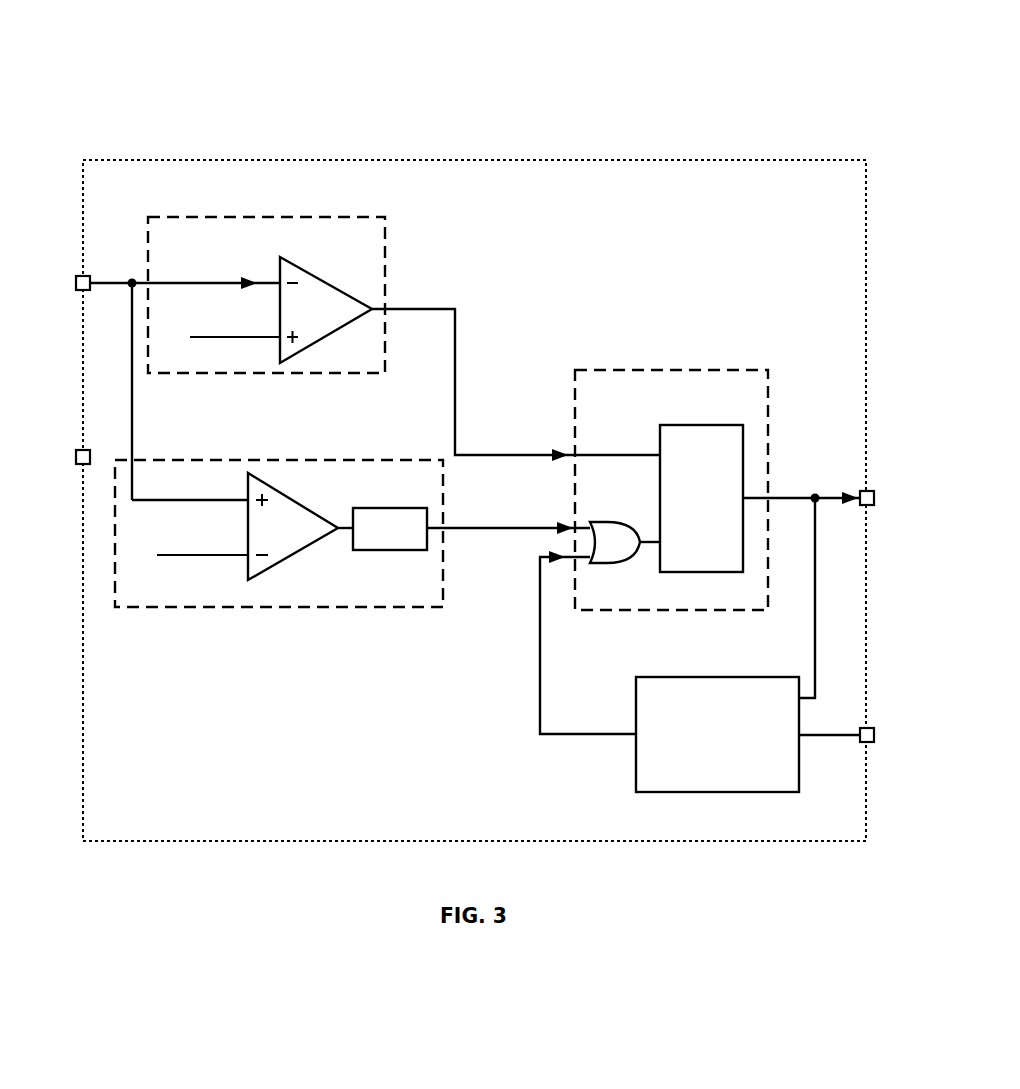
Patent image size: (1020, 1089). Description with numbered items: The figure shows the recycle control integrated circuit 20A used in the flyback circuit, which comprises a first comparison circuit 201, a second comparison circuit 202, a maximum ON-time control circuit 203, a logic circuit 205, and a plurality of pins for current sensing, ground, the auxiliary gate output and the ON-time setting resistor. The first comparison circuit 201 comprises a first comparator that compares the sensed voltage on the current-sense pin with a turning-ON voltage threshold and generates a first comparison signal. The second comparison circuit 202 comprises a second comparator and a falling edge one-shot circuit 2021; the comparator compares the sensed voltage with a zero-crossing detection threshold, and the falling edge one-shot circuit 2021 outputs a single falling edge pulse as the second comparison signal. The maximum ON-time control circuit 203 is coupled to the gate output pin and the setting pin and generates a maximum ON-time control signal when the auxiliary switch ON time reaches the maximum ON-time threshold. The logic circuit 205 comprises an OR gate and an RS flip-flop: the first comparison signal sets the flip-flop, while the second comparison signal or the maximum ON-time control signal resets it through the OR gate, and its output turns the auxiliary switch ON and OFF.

The recycle control integrated circuit 20A is at (636, 56).
The first comparison circuit 201 is at (243, 375).
The second comparison circuit 202 is at (279, 553).
The falling edge one-shot circuit 2021 is at (390, 529).
The maximum ON-time control circuit 203 is at (648, 794).
The logic circuit 205 is at (668, 612).